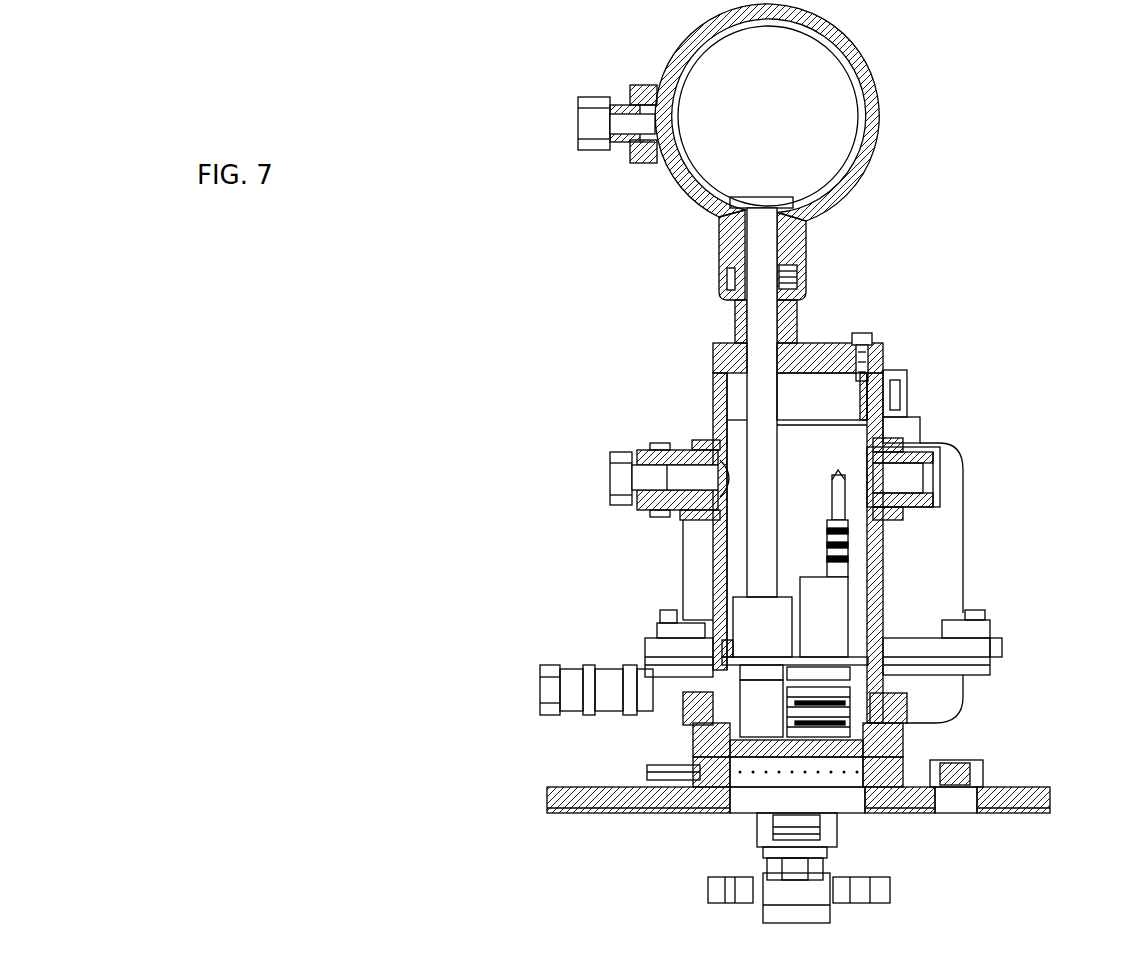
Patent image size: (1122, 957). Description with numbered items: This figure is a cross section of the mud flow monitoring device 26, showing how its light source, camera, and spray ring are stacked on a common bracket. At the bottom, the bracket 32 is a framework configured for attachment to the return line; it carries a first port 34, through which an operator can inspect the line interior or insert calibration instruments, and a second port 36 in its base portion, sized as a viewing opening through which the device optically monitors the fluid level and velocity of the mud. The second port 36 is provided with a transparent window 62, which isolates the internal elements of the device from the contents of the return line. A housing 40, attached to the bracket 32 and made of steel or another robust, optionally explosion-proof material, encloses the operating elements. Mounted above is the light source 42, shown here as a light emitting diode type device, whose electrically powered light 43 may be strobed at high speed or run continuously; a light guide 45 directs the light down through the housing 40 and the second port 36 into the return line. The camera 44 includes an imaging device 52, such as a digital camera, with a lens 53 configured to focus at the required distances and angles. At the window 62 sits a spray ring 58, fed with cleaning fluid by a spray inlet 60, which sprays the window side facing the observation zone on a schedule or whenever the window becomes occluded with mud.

The mud flow monitoring device 26 is at (986, 258).
The light source 42 is at (870, 82).
The light 43 is at (765, 196).
The light guide 45 is at (743, 447).
The housing 40 is at (822, 345).
The camera 44 is at (884, 356).
The imaging device 52 is at (850, 607).
The lens 53 is at (880, 680).
The transparent window 62 is at (862, 700).
The spray ring 58 is at (903, 743).
The spray inlet 60 is at (647, 768).
The bracket 32 is at (1050, 796).
The first port 34 is at (983, 774).
The second port 36 is at (722, 828).